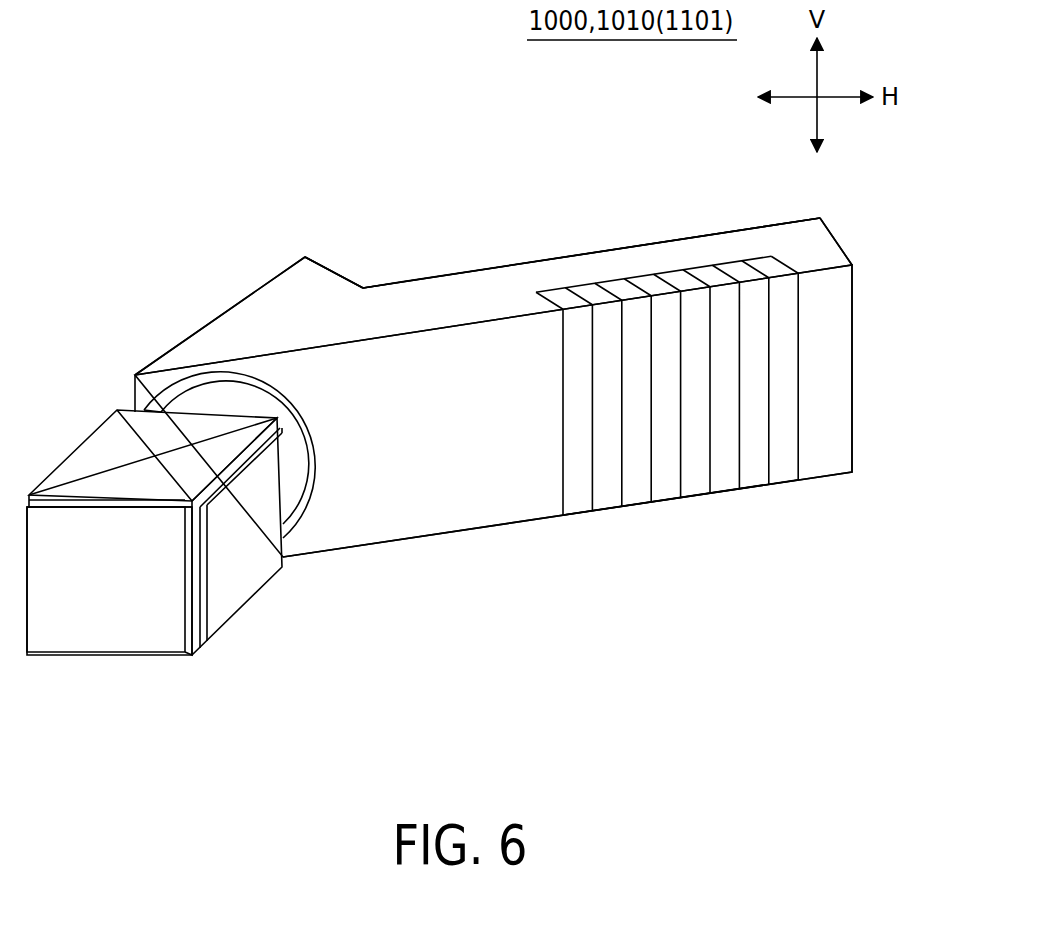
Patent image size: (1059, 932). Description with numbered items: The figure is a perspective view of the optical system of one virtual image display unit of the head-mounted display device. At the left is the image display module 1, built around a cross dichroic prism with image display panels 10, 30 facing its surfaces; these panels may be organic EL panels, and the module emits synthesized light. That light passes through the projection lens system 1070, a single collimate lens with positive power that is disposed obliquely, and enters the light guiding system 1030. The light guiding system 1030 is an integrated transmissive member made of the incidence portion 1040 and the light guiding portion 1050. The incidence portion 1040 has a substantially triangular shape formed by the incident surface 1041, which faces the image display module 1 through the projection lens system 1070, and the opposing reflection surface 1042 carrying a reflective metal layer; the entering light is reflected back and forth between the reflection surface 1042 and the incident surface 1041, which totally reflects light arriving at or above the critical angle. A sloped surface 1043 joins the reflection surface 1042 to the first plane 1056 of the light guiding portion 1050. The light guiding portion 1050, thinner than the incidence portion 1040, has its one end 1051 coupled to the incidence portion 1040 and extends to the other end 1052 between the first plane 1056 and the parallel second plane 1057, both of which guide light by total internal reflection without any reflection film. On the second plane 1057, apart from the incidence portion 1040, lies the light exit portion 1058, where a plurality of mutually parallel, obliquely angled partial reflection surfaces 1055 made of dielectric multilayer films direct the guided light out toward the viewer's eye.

The image display module 1 is at (219, 681).
The image display panel 10 is at (255, 585).
The image display panel 30 is at (85, 577).
The light guiding system 1030 is at (609, 247).
The incidence portion 1040 is at (305, 282).
The incident surface 1041 is at (272, 375).
The reflection surface 1042 is at (231, 306).
The sloped surface 1043 is at (340, 277).
The light guiding portion 1050 is at (470, 290).
The one end 1051 is at (365, 287).
The other end 1052 is at (837, 241).
The partial reflection surfaces 1055 is at (680, 425).
The first plane 1056 is at (538, 262).
The second plane 1057 is at (430, 513).
The light exit portion 1058 is at (571, 545).
The projection lens system 1070 is at (190, 383).